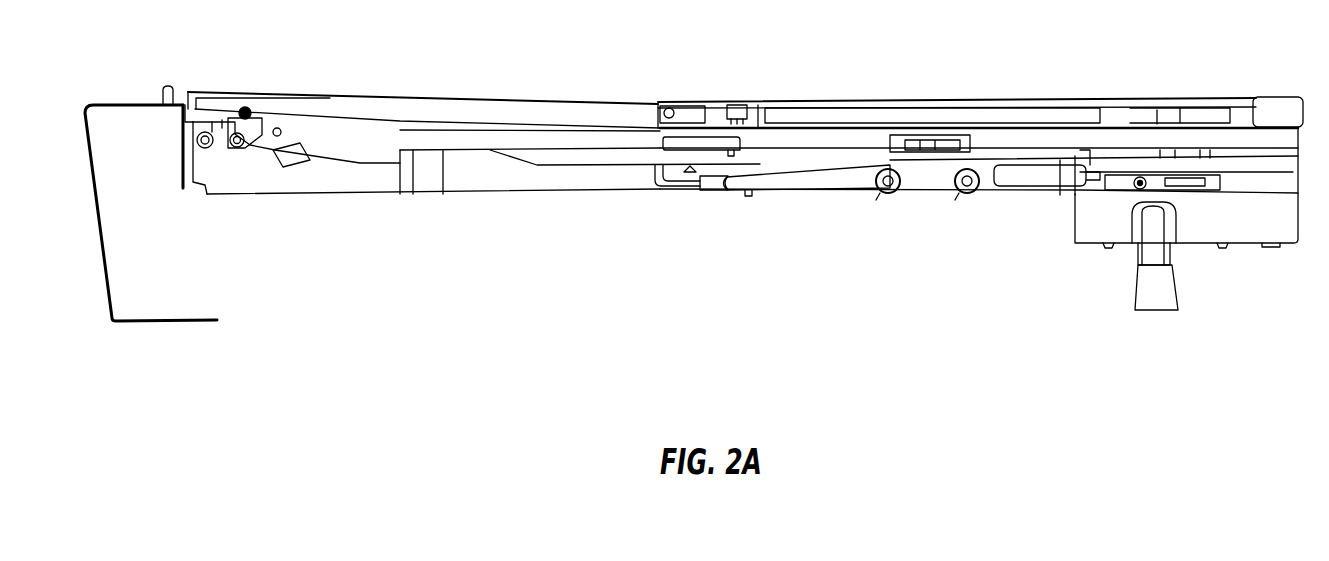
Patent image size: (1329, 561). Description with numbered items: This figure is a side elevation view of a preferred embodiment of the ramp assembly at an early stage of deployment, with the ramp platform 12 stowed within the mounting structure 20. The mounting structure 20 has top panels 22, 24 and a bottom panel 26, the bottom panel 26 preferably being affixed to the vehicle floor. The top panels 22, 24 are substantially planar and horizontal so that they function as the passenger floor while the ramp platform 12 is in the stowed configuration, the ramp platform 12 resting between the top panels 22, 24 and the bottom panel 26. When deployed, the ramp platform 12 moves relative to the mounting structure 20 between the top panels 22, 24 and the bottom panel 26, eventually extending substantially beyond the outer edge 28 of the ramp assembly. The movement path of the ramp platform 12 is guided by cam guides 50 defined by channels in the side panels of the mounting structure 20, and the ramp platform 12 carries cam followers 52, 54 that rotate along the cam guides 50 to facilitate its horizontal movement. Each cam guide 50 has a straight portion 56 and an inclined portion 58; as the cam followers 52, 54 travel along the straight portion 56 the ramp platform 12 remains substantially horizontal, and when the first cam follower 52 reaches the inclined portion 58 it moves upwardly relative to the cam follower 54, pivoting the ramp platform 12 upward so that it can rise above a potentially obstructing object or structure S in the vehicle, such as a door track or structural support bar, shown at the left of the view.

The obstructing object or structure S is at (97, 225).
The ramp platform 12 is at (220, 112).
The outer edge 28 is at (185, 105).
The top panel 22 is at (452, 96).
The top panel 24 is at (988, 101).
The mounting structure 20 is at (478, 165).
The inclined portion 58 is at (517, 160).
The straight portion 56 is at (590, 165).
The bottom panel 26 is at (632, 190).
The cam guide 50 is at (630, 176).
The first cam follower 52 is at (883, 193).
The cam follower 54 is at (963, 193).